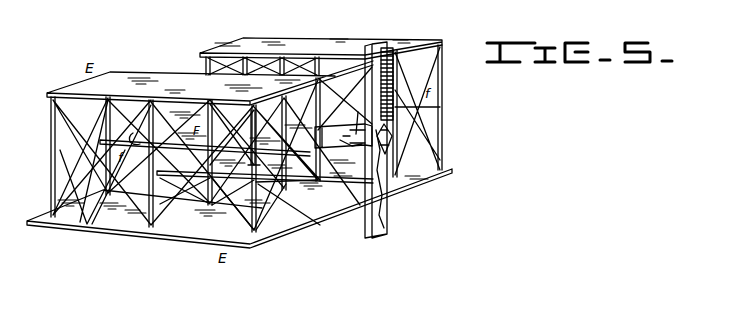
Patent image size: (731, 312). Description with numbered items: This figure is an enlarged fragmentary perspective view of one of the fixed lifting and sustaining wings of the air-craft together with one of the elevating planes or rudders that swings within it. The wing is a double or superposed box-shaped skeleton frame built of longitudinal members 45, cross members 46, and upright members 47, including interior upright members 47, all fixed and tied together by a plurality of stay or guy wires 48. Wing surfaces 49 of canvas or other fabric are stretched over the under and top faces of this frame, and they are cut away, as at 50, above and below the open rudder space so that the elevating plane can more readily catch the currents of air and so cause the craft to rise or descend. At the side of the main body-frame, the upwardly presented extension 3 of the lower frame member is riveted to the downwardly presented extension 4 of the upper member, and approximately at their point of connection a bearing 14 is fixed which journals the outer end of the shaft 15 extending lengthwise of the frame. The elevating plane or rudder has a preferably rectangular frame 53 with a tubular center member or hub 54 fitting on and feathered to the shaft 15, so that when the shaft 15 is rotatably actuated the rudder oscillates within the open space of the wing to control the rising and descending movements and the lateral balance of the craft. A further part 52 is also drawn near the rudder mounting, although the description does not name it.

The upwardly presented extension 3 is at (385, 224).
The downwardly presented extension 4 is at (387, 52).
The bearing 14 is at (392, 146).
The shaft 15 is at (359, 116).
The longitudinal member 45 is at (205, 63).
The cross member 46 is at (290, 234).
The upright member 47 is at (117, 152).
The stay or guy wire 48 is at (93, 226).
The wing surface 49 is at (243, 129).
The cut-away 50 is at (240, 144).
The shaft bracket 52 is at (343, 136).
The frame 53 is at (136, 133).
The tubular center member or hub 54 is at (342, 146).